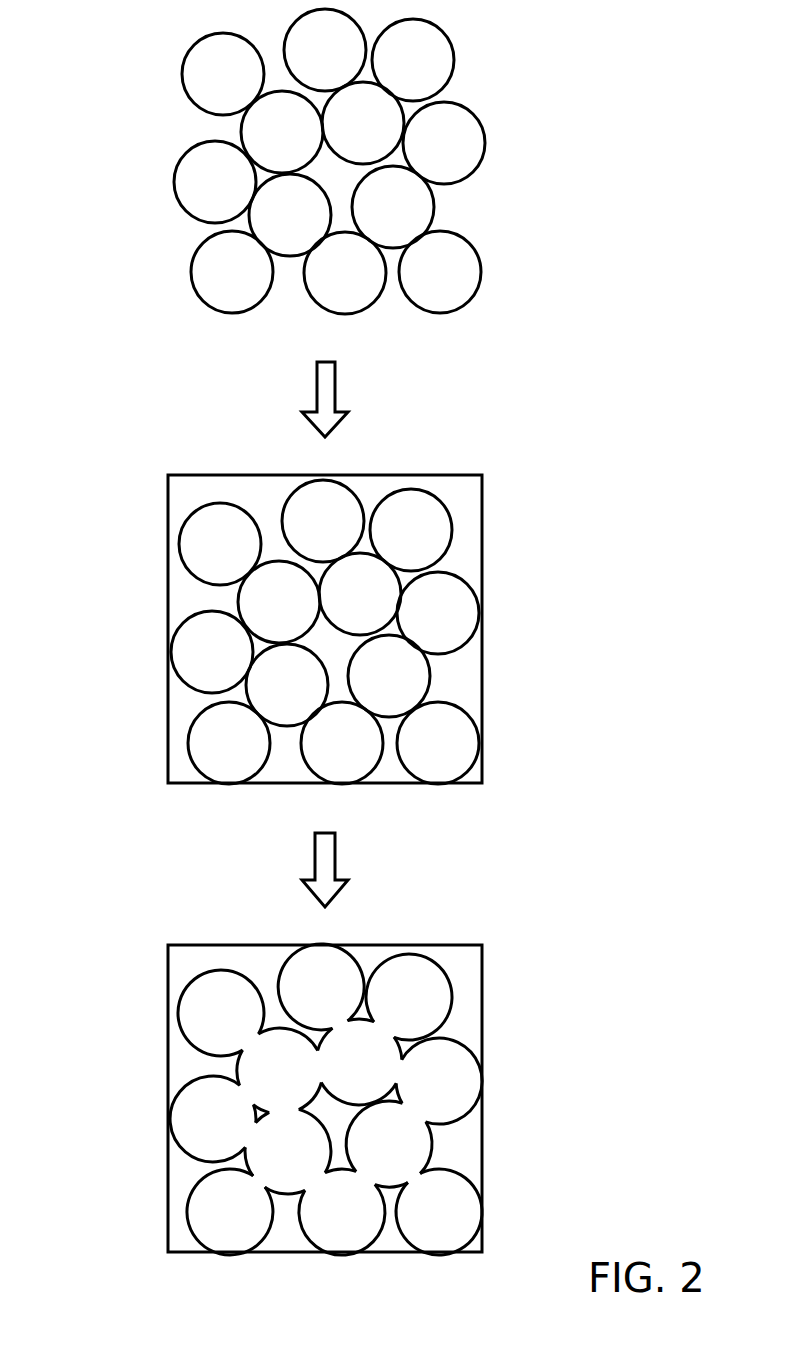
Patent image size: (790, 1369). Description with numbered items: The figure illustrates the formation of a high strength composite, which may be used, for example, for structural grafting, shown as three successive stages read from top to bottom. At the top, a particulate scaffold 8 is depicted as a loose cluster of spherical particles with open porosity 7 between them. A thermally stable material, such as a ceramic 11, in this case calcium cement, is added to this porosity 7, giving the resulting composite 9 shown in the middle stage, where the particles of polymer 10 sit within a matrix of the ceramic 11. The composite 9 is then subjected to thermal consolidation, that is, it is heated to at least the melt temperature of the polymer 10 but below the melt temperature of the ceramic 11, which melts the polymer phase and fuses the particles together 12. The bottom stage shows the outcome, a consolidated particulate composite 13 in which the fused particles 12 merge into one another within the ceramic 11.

The porosity 7 is at (340, 182).
The particulate scaffold 8 is at (135, 10).
The composite 9 is at (133, 480).
The polymer 10 is at (398, 684).
The ceramic 11 is at (463, 552).
The fused particles 12 is at (437, 1080).
The consolidated particulate composite 13 is at (133, 947).